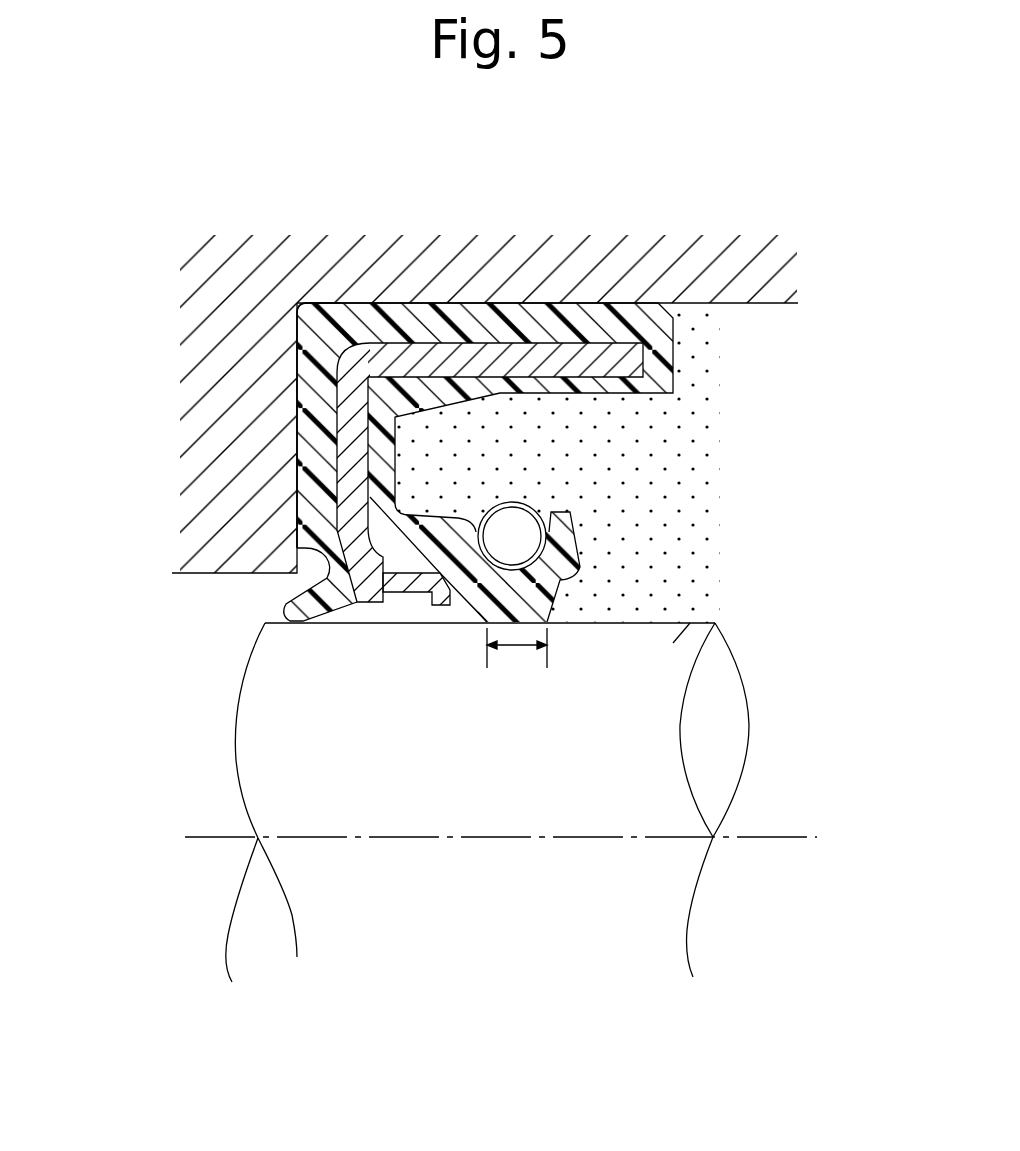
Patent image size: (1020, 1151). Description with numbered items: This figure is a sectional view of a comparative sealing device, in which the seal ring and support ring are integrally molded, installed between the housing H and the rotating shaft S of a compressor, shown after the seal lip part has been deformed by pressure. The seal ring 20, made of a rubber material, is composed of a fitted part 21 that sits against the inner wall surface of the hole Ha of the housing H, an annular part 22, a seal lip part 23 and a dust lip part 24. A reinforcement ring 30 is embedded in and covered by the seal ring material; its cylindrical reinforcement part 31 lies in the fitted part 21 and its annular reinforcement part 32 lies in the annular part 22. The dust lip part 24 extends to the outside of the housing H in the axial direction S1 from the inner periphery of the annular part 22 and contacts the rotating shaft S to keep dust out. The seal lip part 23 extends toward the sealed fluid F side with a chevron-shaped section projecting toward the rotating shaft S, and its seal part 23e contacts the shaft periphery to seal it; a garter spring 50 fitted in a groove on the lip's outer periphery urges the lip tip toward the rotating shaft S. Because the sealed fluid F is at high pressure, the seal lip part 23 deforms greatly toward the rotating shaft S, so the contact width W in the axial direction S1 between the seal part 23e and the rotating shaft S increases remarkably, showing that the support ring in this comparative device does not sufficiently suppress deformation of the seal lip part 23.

The seal ring 20 is at (473, 456).
The fitted part 21 is at (642, 335).
The annular part 22 is at (315, 372).
The seal lip part 23 is at (578, 565).
The seal part 23e is at (487, 628).
The dust lip part 24 is at (305, 595).
The reinforcement ring 30 is at (423, 456).
The cylindrical reinforcement part 31 is at (403, 357).
The annular reinforcement part 32 is at (350, 440).
The garter spring 50 is at (528, 503).
The housing H is at (762, 290).
The hole Ha is at (703, 310).
The sealed fluid F is at (650, 465).
The rotating shaft S is at (688, 613).
The axial direction S1 is at (773, 837).
The contact width W is at (517, 680).